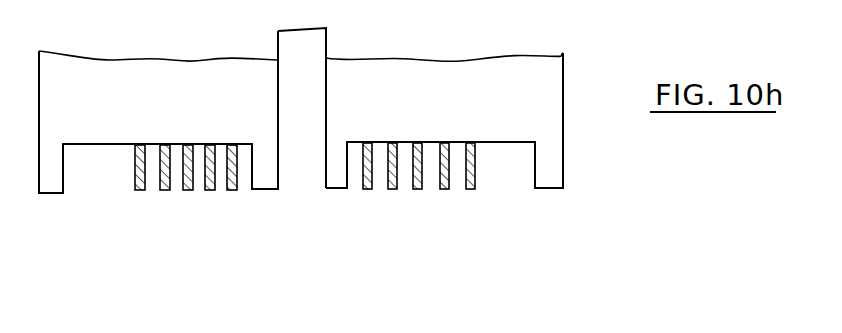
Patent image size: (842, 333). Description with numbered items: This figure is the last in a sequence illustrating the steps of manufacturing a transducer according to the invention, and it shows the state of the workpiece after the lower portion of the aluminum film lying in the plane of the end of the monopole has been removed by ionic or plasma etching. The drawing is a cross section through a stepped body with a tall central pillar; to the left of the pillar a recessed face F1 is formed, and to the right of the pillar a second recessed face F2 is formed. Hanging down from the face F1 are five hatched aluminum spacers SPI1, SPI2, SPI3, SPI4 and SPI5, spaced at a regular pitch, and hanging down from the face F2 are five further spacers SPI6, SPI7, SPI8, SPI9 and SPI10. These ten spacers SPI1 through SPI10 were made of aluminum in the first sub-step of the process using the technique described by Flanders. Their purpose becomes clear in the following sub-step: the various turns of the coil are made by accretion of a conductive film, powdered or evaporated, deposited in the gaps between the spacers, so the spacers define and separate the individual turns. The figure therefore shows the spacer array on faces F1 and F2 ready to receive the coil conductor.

The first face of body F1 is at (98, 144).
The second face of body F2 is at (405, 142).
The spacer SPI1 is at (138, 192).
The spacer SPI2 is at (163, 192).
The spacer SPI3 is at (185, 192).
The spacer SPI4 is at (208, 192).
The spacer SPI5 is at (230, 192).
The spacer SPI6 is at (367, 190).
The spacer SPI7 is at (393, 190).
The spacer SPI8 is at (417, 190).
The spacer SPI9 is at (443, 190).
The spacer SPI10 is at (473, 190).